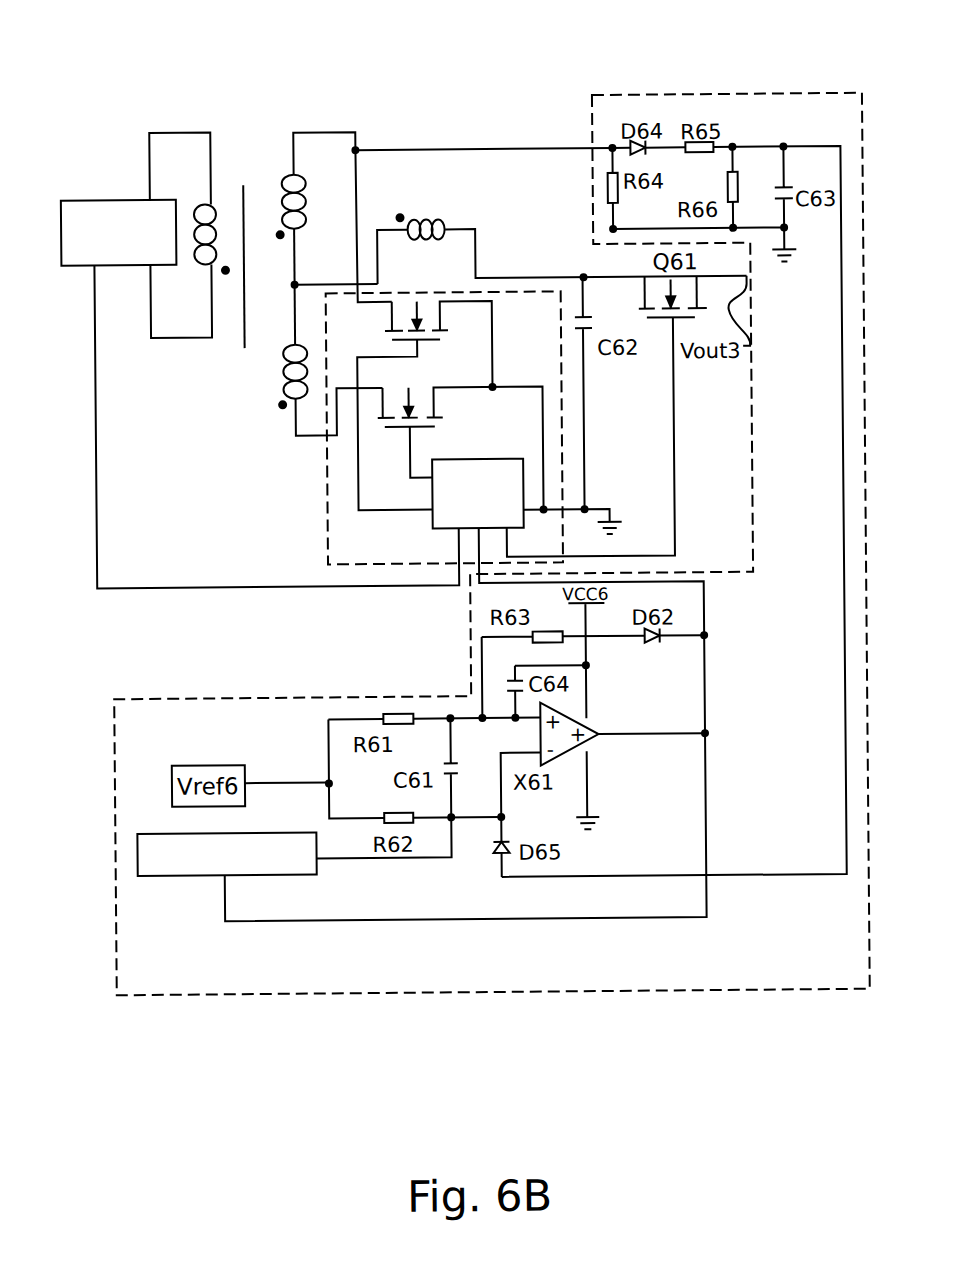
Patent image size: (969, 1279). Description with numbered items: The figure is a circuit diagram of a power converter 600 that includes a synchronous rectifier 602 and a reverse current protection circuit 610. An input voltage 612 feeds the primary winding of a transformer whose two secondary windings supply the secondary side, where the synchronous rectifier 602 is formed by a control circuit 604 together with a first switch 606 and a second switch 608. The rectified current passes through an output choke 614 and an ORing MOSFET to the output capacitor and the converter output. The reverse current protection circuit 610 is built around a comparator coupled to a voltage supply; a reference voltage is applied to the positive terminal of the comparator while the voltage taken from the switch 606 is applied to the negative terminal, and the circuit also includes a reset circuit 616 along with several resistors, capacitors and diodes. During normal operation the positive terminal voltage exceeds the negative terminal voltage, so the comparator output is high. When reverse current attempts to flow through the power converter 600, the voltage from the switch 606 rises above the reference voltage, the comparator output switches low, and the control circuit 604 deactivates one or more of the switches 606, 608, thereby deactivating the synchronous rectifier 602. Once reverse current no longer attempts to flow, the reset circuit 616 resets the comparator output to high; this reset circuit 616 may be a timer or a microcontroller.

The power converter 600 is at (224, 72).
The synchronous rectifier 602 is at (329, 503).
The control circuit 604 is at (436, 528).
The switch 606 is at (444, 317).
The switch 608 is at (436, 402).
The reverse current protection circuit 610 is at (154, 992).
The input voltage 612 is at (122, 197).
The output choke 614 is at (420, 220).
The reset circuit 616 is at (197, 873).